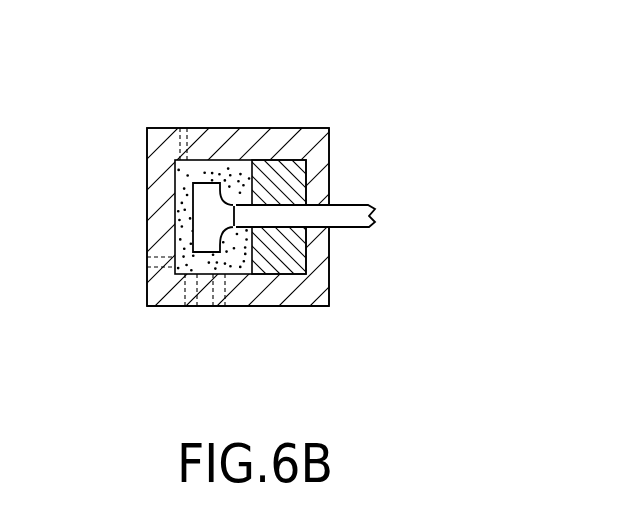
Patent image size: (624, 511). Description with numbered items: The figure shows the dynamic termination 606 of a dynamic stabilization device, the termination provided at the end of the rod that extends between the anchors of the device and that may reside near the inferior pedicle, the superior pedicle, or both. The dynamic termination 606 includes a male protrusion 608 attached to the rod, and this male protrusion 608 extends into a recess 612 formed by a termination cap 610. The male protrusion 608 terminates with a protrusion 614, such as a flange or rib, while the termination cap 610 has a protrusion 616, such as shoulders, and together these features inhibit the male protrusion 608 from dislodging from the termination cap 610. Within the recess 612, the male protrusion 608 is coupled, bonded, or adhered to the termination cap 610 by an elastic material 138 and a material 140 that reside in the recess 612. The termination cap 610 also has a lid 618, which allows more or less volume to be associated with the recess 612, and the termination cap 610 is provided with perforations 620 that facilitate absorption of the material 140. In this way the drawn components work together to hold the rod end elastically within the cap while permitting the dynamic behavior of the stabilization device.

The dynamic termination 606 is at (510, 130).
The male protrusion 608 is at (342, 218).
The termination cap 610 is at (210, 138).
The recess 612 is at (290, 170).
The protrusion 614 is at (202, 212).
The protrusion 616 is at (320, 180).
The lid 618 is at (147, 183).
The perforations 620 is at (190, 306).
The elastic material 138 is at (285, 306).
The material 140 is at (230, 173).